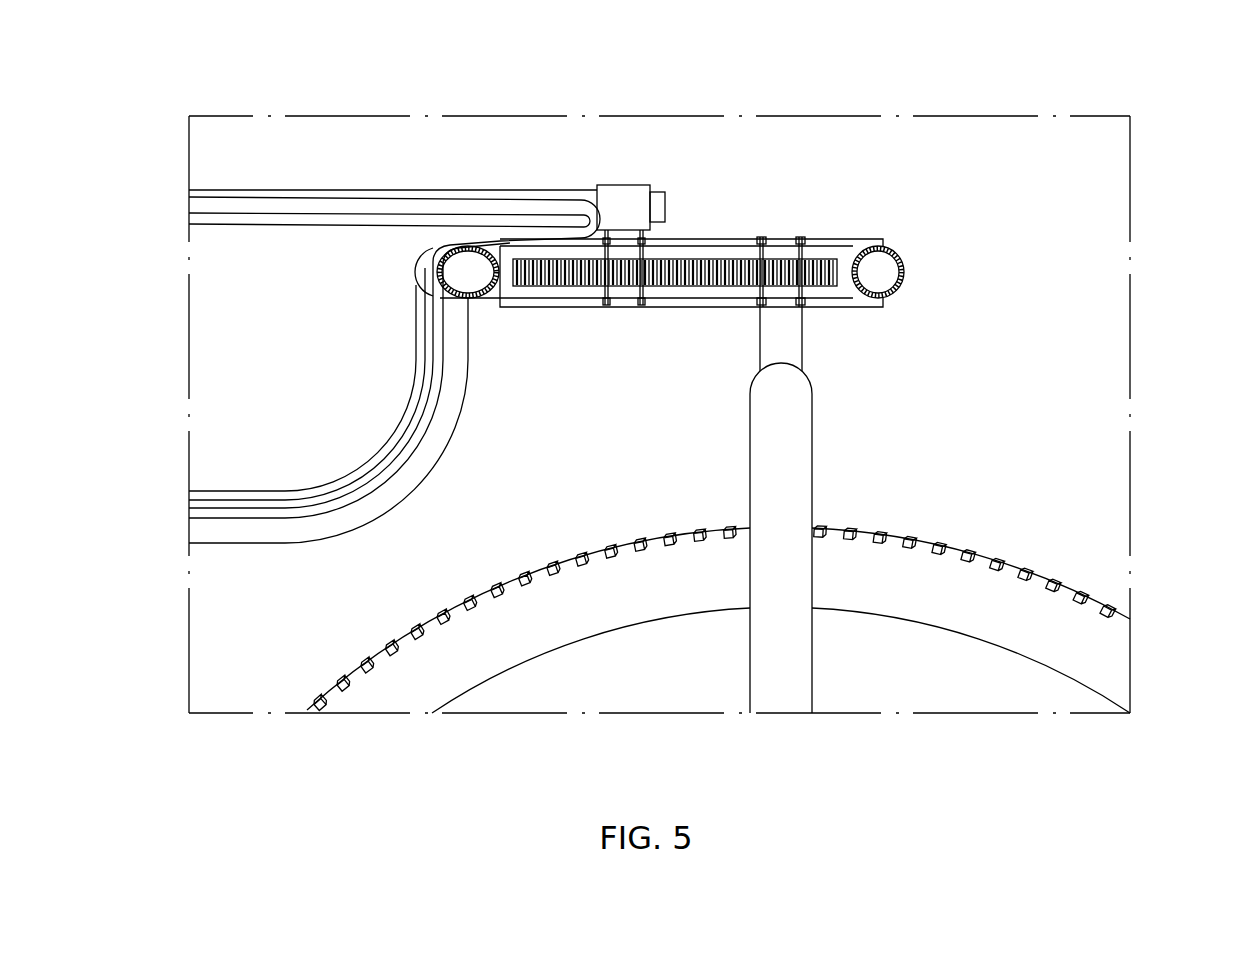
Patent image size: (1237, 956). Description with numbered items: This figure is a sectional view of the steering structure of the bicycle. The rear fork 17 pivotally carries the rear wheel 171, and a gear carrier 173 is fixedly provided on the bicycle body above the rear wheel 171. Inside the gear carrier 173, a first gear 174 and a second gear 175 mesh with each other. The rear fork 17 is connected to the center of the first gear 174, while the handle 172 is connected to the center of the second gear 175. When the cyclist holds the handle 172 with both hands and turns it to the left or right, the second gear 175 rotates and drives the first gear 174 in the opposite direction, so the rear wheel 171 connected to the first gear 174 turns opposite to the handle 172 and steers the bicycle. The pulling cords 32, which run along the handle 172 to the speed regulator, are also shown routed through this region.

The handle 172 is at (393, 188).
The second gear 175 is at (668, 265).
The first gear 174 is at (827, 262).
The gear carrier 173 is at (903, 260).
The pulling cords 32 is at (327, 500).
The rear fork 17 is at (807, 480).
The rear wheel 171 is at (1005, 598).